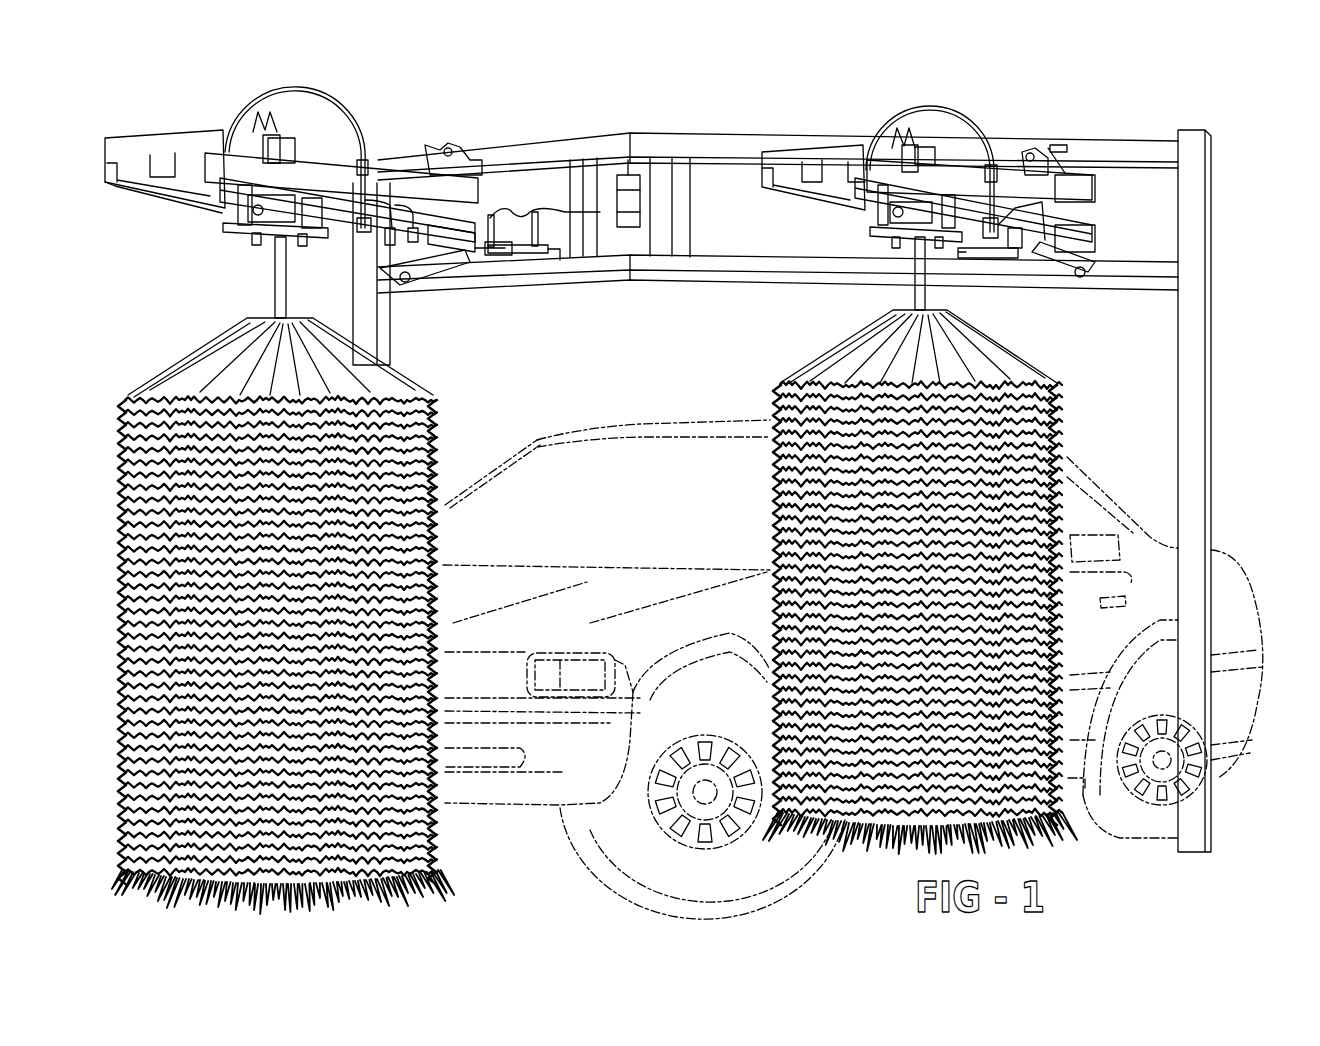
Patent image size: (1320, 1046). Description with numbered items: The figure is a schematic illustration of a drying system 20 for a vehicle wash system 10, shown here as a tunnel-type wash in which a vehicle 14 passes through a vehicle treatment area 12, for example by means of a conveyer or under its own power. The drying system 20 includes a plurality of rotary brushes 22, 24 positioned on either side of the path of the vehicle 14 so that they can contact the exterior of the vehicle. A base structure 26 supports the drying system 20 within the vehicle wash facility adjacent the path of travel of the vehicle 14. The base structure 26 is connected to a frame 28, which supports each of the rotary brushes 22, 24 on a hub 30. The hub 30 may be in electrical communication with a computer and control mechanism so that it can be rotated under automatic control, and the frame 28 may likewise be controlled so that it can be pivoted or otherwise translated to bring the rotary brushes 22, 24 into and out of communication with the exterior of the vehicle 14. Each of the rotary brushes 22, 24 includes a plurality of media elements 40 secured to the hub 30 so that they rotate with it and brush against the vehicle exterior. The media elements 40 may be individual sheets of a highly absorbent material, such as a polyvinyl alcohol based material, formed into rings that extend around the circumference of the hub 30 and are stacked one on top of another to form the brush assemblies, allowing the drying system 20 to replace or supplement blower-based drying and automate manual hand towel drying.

The vehicle wash system 10 is at (814, 469).
The vehicle treatment area 12 is at (530, 852).
The vehicle 14 is at (570, 430).
The drying system 20 is at (645, 125).
The rotary brush 22 is at (122, 668).
The rotary brush 24 is at (1062, 510).
The base structure 26 is at (385, 357).
The frame 28 is at (370, 148).
The hub 30 is at (275, 286).
The media elements 40 is at (150, 547).